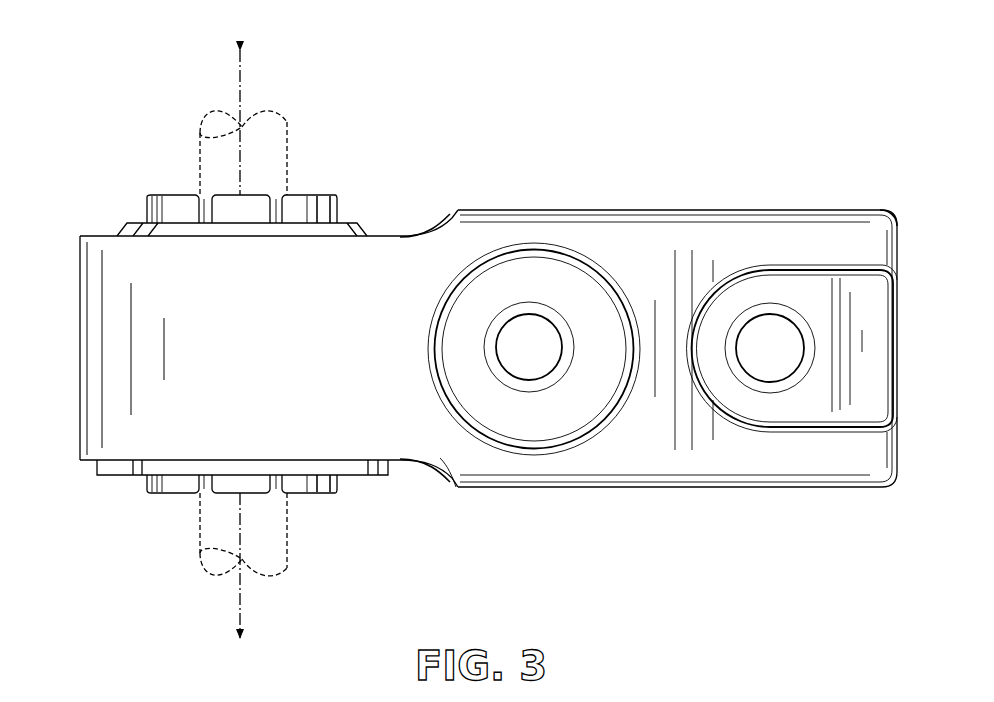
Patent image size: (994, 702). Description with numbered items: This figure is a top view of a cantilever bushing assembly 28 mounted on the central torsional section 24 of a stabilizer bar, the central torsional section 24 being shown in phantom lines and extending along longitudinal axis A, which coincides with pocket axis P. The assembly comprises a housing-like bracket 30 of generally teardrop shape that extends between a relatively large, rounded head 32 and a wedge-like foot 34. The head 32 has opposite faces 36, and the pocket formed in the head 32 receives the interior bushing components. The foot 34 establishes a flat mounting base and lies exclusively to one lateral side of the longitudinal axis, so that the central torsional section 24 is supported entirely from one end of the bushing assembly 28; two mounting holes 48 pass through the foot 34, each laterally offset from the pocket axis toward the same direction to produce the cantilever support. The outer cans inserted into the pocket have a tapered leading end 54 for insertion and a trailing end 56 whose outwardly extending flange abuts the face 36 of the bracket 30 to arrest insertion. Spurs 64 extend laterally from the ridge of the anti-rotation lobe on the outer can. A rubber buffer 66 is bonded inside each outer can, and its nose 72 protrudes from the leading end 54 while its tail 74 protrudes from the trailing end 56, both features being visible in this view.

The central torsional section 24 is at (290, 143).
The cantilever bushing assembly 28 is at (617, 105).
The bracket 30 is at (457, 493).
The head 32 is at (80, 370).
The foot 34 is at (890, 218).
The faces 36 is at (400, 237).
The mounting hole 48 is at (505, 376).
The leading end 54 is at (123, 223).
The trailing end 56 is at (113, 477).
The spurs 64 is at (339, 196).
The rubber buffer 66 is at (338, 494).
The nose 72 is at (178, 193).
The tail 74 is at (170, 493).